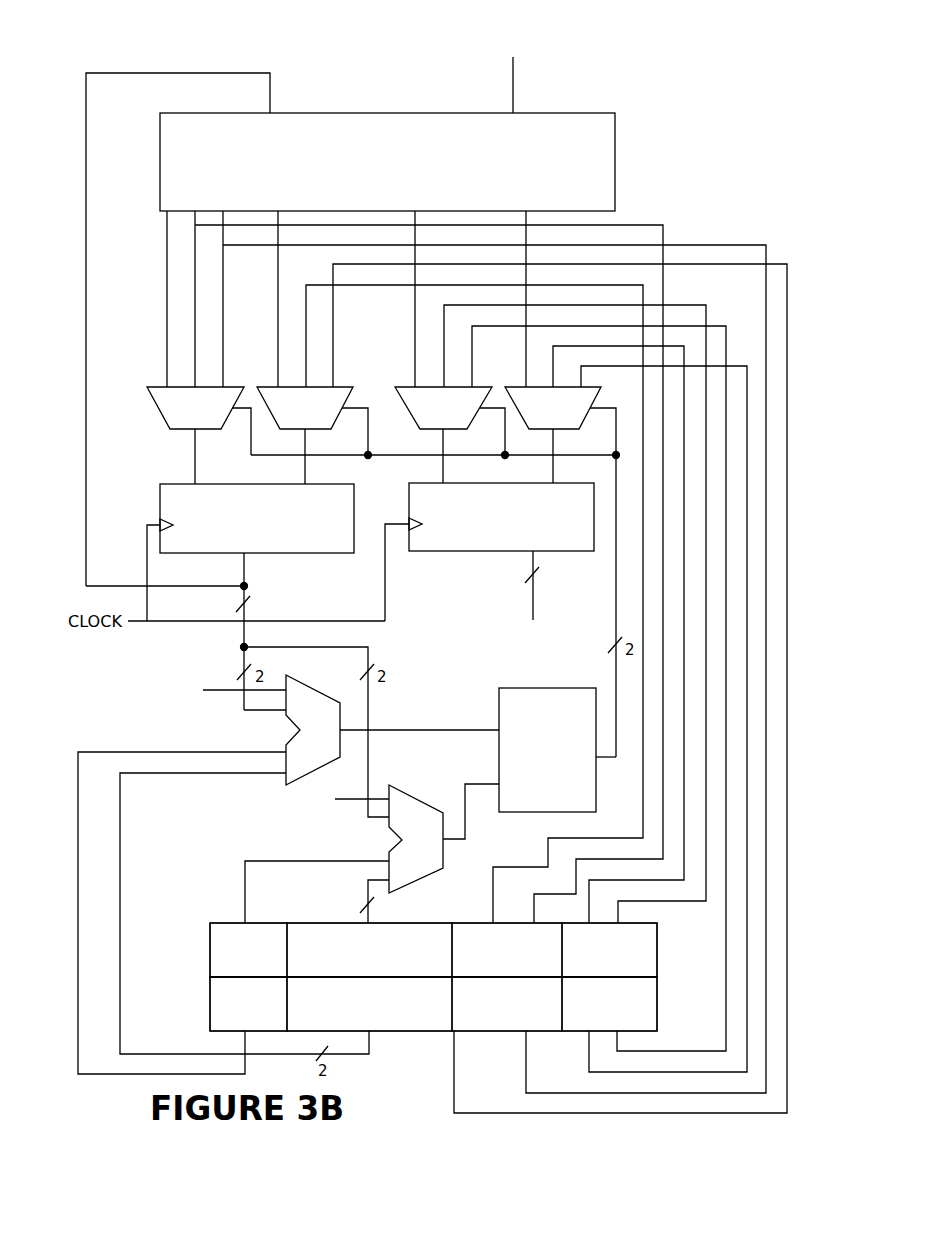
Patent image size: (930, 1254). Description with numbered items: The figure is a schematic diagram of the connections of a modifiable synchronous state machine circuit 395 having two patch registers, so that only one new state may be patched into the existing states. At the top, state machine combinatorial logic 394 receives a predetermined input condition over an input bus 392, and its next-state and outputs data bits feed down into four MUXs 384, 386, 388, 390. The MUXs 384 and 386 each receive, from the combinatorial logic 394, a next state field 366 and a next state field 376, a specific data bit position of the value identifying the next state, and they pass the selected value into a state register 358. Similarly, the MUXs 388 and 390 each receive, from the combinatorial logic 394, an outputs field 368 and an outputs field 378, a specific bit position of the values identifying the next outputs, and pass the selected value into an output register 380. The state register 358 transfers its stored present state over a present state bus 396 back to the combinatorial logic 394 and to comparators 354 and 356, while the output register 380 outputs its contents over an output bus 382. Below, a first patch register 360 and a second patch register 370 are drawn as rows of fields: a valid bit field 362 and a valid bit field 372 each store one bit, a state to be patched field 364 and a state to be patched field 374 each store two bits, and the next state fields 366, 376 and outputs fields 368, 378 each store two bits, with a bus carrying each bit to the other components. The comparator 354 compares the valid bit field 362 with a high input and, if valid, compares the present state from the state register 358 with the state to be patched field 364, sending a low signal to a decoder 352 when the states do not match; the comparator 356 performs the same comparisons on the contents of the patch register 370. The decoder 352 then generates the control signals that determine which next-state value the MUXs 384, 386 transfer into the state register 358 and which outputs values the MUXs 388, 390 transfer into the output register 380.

The modifiable synchronous state machine circuit 395 is at (170, 307).
The input bus 392 is at (513, 62).
The combinatorial logic 394 is at (387, 162).
The MUX 384 is at (199, 435).
The MUX 386 is at (312, 435).
The MUX 388 is at (450, 435).
The MUX 390 is at (560, 435).
The state register 358 is at (257, 518).
The output register 380 is at (501, 517).
The present state bus 396 is at (244, 567).
The output bus 382 is at (533, 590).
The comparator 356 is at (339, 730).
The comparator 354 is at (344, 854).
The decoder 352 is at (529, 763).
The patch register 360 is at (210, 948).
The patch register 370 is at (210, 1003).
The valid bit field 362 is at (248, 950).
The state to be patched field 364 is at (369, 950).
The next state field 366 is at (507, 950).
The outputs field 368 is at (609, 950).
The valid bit field 372 is at (248, 1004).
The state to be patched field 374 is at (369, 1004).
The next state field 376 is at (507, 1004).
The outputs field 378 is at (609, 1004).